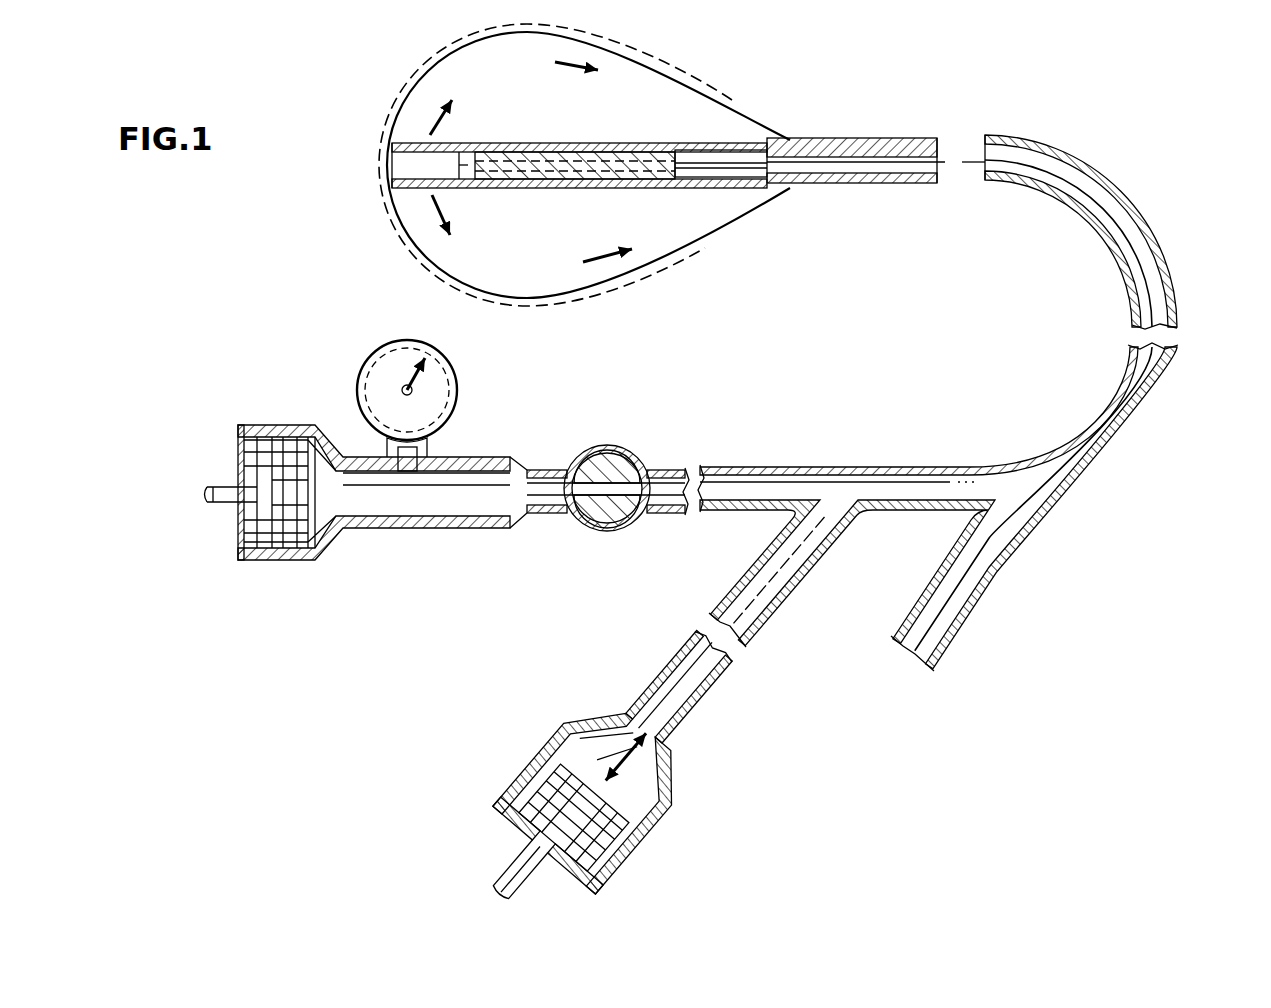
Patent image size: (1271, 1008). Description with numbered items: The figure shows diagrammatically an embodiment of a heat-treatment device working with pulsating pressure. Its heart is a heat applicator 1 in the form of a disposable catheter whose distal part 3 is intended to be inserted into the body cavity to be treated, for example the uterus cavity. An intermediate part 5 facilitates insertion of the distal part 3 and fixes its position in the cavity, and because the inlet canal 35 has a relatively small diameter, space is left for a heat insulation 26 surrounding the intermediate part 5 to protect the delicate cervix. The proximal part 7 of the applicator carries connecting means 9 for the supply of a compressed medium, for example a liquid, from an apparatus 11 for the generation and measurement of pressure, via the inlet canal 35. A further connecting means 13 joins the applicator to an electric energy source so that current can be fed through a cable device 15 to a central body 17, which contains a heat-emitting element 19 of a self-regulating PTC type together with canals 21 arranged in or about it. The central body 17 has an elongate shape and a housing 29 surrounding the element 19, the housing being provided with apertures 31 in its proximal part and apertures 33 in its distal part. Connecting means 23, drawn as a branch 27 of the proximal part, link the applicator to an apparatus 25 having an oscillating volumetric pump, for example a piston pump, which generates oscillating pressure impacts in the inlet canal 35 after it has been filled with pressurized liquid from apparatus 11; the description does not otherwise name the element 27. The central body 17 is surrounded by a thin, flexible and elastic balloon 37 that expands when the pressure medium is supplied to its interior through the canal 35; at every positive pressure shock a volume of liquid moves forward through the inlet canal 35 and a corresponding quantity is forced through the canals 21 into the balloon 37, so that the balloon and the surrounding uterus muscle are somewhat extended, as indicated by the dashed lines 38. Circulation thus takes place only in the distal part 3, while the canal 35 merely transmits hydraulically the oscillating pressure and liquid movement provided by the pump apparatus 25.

The heat applicator 1 is at (1106, 221).
The distal part 3 is at (584, 180).
The intermediate part 5 is at (876, 124).
The proximal part 7 is at (1117, 464).
The connecting means 9 is at (706, 466).
The apparatus 11 is at (431, 528).
The connecting means 13 is at (914, 664).
The cable device 15 is at (1132, 210).
The central body 17 is at (575, 167).
The heat-emitting element 19 is at (530, 160).
The canals 21 is at (545, 188).
The connecting means 23 is at (748, 650).
The apparatus 25 is at (677, 805).
The heat insulation 26 is at (846, 140).
The inflation branch 27 is at (783, 570).
The housing 29 is at (664, 149).
The apertures 31 is at (695, 188).
The apertures 33 is at (432, 157).
The inlet canal 35 is at (1153, 270).
The balloon 37 is at (637, 268).
The dashed lines 38 is at (588, 293).